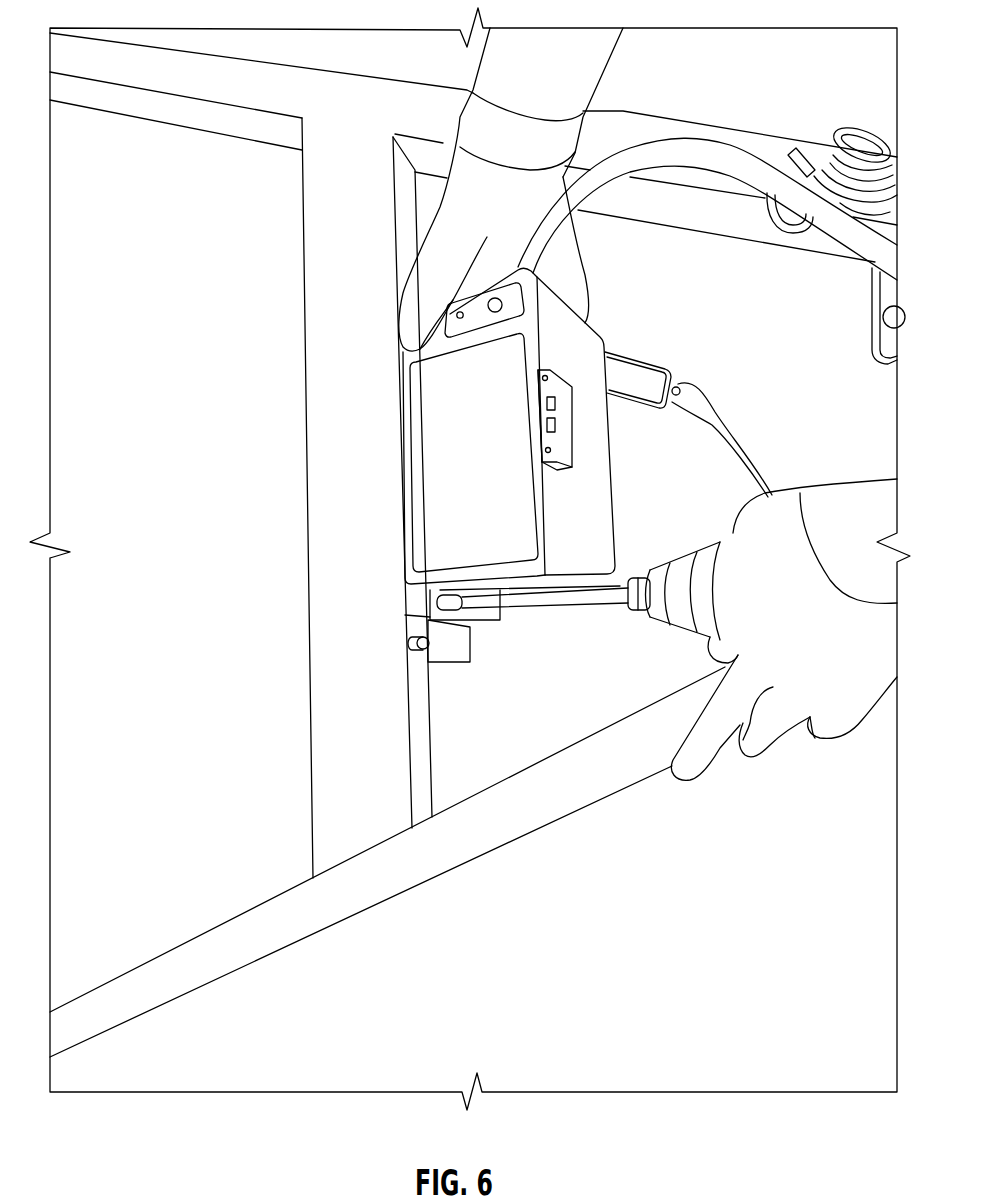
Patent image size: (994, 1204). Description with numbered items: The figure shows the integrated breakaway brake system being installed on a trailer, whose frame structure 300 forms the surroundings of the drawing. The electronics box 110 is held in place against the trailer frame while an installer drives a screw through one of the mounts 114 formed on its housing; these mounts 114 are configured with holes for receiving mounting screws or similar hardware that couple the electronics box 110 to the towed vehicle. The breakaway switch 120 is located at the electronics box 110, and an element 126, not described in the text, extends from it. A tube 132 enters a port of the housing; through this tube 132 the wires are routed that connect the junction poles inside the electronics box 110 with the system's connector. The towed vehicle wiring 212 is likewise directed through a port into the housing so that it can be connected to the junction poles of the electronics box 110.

The electronics box 110 is at (374, 373).
The mount 114 is at (462, 628).
The breakaway switch 120 is at (627, 353).
The cord 126 is at (743, 440).
The tube 132 is at (718, 163).
The towed vehicle wiring 212 is at (850, 125).
The frame structure 300 is at (296, 765).